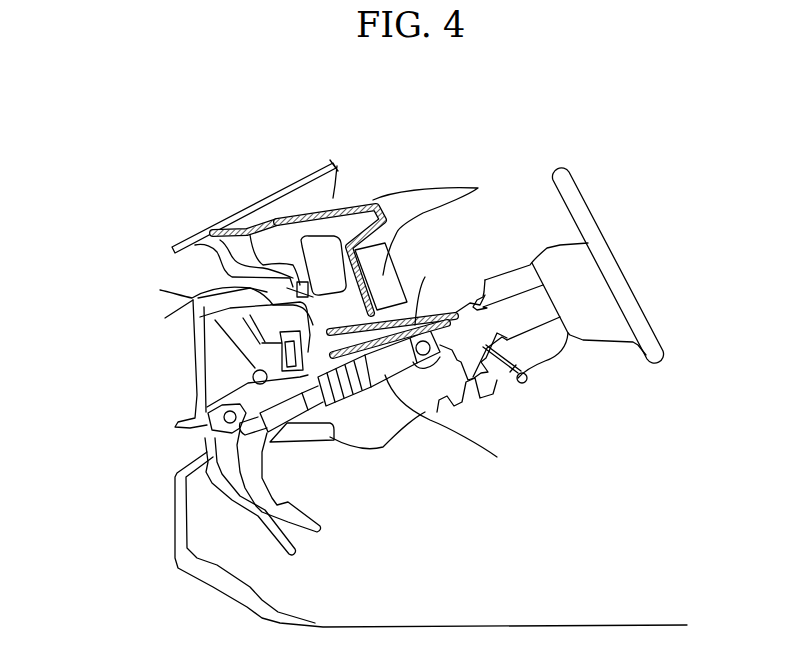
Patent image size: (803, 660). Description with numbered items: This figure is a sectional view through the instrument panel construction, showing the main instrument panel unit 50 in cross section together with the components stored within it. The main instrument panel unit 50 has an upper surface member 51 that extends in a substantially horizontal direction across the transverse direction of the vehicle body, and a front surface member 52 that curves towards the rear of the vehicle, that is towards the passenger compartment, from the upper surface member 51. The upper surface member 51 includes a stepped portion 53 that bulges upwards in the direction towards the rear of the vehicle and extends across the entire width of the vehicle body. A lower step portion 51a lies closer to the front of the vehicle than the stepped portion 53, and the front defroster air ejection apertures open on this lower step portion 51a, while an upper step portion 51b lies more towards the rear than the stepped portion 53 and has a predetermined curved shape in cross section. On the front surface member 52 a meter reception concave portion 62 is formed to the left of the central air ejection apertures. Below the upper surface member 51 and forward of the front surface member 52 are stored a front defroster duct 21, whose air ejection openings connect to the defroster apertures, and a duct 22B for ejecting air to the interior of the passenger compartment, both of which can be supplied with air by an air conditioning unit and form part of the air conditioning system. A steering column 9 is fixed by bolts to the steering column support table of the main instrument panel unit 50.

The steering column 9 is at (375, 381).
The front defroster duct 21 is at (218, 255).
The duct for ejecting to the interior of the passenger compartment 22B is at (193, 298).
The main instrument panel unit 50 is at (296, 218).
The upper surface member 51 is at (374, 203).
The lower step portion 51a is at (220, 218).
The upper step portion 51b is at (348, 198).
The front surface member 52 is at (407, 302).
The stepped portion 53 is at (245, 213).
The meter reception concave portion 62 is at (405, 312).